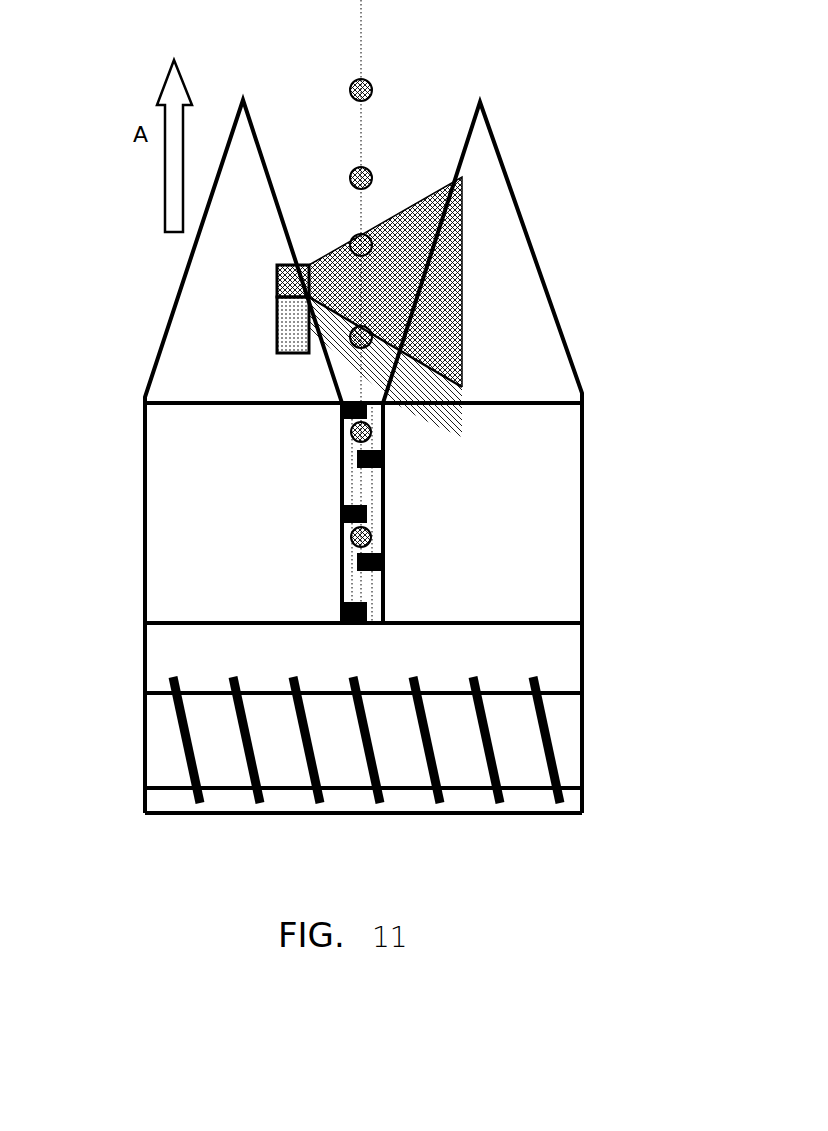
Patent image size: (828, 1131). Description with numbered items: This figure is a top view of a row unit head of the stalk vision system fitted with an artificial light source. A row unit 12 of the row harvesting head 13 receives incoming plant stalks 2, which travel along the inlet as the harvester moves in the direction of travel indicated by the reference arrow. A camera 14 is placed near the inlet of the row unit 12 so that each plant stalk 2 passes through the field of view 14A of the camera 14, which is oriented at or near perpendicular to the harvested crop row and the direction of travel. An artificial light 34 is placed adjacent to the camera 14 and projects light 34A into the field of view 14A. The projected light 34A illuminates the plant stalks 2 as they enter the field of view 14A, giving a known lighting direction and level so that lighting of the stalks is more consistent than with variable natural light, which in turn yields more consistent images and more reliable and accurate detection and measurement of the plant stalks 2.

The plant stalks 2 is at (351, 83).
The row unit 12 is at (158, 535).
The row harvesting head 13 is at (565, 668).
The camera 14 is at (277, 325).
The field of view 14A is at (455, 430).
The artificial light source 34 is at (277, 290).
The projected light 34A is at (418, 190).